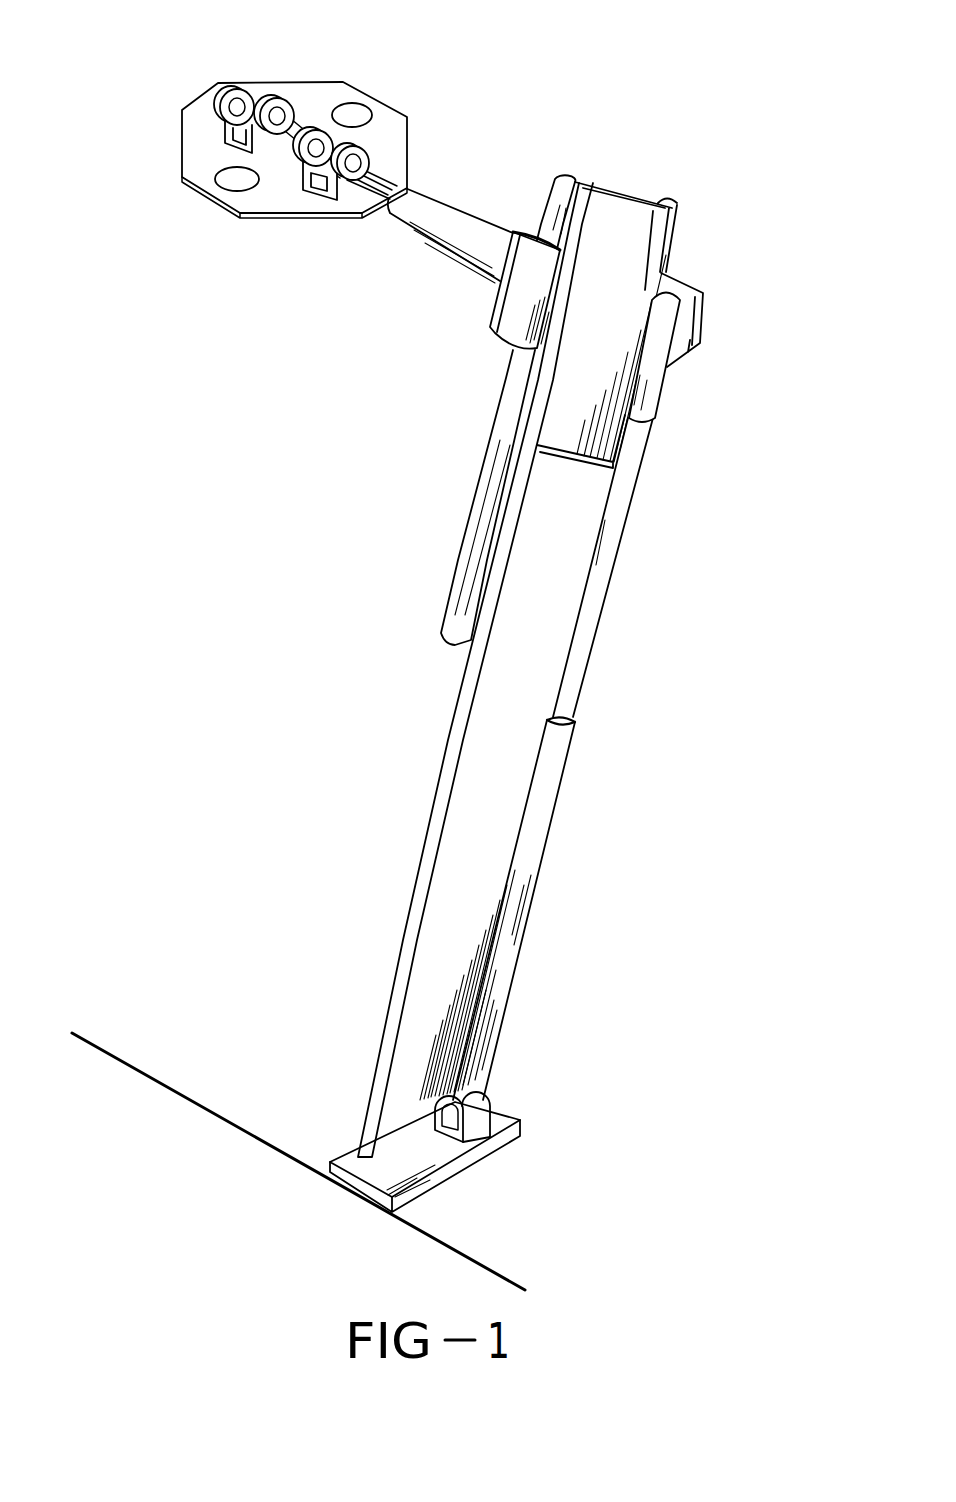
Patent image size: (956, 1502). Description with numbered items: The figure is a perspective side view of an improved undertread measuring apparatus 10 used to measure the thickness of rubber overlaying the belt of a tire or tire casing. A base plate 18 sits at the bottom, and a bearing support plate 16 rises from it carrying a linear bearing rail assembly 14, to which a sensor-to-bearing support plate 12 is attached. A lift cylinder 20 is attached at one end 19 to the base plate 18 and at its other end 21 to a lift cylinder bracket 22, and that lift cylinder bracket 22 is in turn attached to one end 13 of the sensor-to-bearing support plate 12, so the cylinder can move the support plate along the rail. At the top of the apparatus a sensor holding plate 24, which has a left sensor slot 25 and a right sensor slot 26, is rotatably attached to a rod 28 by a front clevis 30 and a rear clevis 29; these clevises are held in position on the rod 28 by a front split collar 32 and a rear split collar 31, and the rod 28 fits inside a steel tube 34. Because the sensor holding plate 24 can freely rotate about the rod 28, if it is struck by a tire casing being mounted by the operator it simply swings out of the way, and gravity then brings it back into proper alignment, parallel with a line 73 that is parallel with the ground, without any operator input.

The undertread measuring apparatus 10 is at (418, 54).
The sensor-to-bearing support plate 12 is at (510, 327).
The end of the sensor-to-bearing support plate 13 is at (535, 232).
The linear bearing rail assembly 14 is at (482, 500).
The bearing support plate 16 is at (382, 1065).
The base plate 18 is at (362, 1173).
The end of the lift cylinder 19 is at (483, 1118).
The lift cylinder 20 is at (530, 851).
The other end of the lift cylinder 21 is at (655, 338).
The lift cylinder bracket 22 is at (682, 292).
The sensor holding plate 24 is at (390, 118).
The left sensor slot 25 is at (353, 115).
The right sensor slot 26 is at (235, 183).
The rod 28 is at (370, 177).
The rear clevis 29 is at (342, 193).
The front clevis 30 is at (238, 93).
The rear split collar 31 is at (300, 160).
The front split collar 32 is at (272, 107).
The steel tube 34 is at (465, 228).
The line 73 is at (107, 1050).